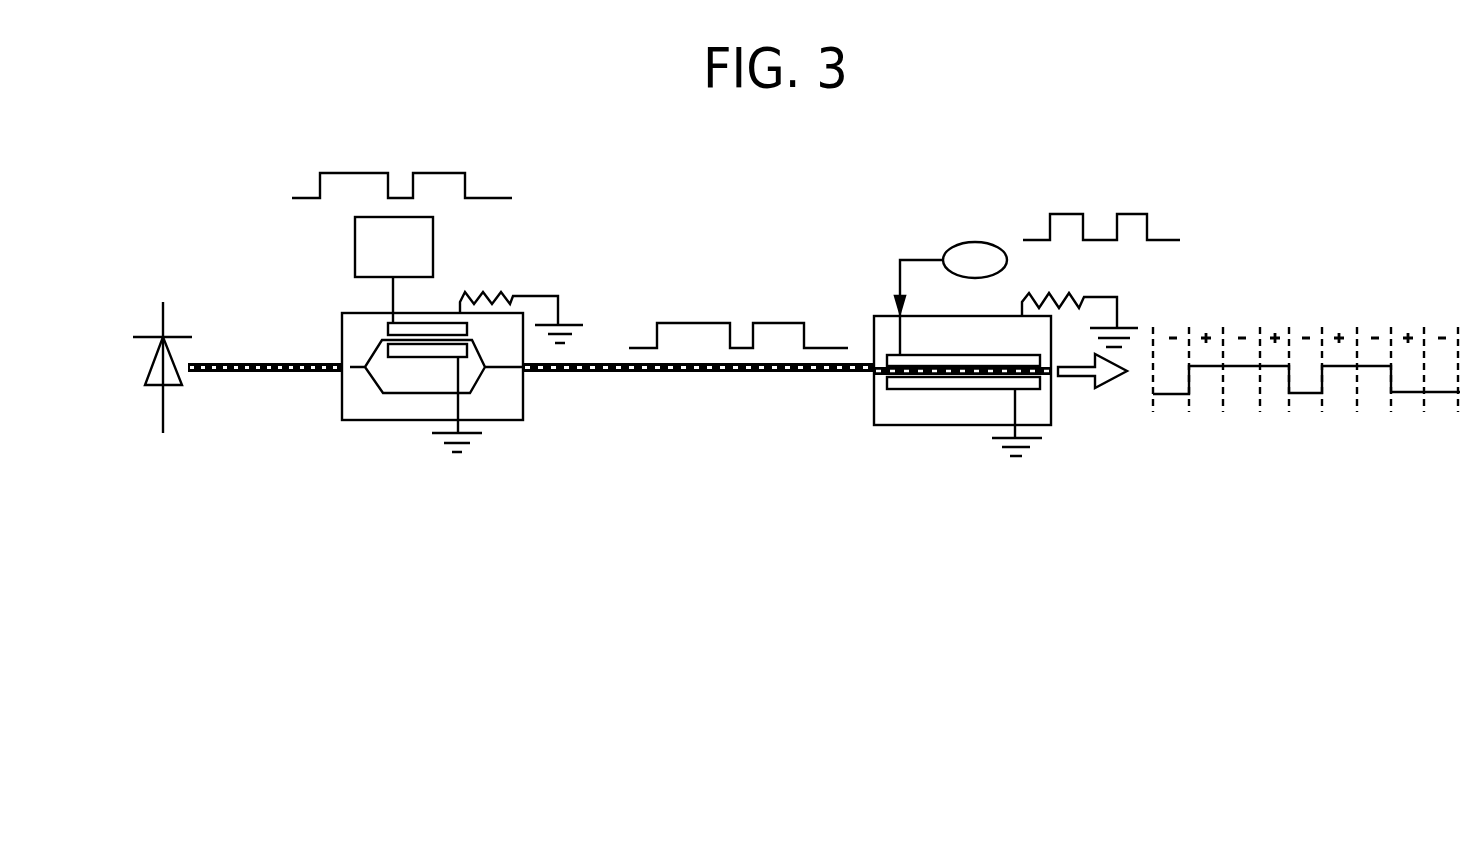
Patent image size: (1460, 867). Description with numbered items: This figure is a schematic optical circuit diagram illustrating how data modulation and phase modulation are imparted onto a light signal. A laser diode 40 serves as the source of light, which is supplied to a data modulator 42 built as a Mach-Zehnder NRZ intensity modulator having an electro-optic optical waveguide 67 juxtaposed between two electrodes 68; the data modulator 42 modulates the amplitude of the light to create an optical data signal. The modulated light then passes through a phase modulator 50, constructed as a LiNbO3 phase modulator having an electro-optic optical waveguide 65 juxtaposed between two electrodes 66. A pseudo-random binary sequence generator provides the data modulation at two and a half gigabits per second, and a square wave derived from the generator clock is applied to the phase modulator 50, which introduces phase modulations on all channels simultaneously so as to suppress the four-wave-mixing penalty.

The laser diode 40 is at (172, 386).
The data modulator 42 is at (498, 421).
The phase modulator 50 is at (972, 425).
The electro-optic optical waveguide 65 is at (1042, 376).
The electrodes 66 is at (887, 381).
The electro-optic optical waveguide 67 is at (478, 352).
The electrodes 68 is at (388, 350).